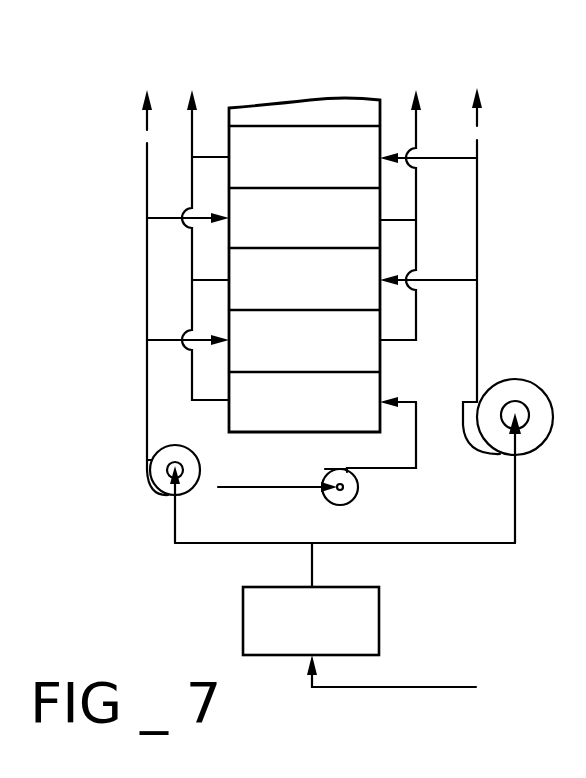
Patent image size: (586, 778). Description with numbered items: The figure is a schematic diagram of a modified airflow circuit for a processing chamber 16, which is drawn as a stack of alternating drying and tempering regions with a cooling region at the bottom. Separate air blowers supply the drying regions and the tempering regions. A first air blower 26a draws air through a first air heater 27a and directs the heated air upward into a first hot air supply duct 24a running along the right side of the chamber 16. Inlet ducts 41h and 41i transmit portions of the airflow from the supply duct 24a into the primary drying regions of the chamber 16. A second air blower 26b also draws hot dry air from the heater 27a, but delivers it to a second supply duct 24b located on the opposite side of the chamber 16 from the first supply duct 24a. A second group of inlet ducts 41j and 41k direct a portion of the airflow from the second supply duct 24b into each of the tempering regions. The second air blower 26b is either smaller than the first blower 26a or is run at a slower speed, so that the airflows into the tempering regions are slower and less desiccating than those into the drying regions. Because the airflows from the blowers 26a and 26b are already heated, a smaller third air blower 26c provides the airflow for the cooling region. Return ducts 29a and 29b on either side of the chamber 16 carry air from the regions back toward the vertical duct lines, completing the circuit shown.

The processing chamber 16 is at (306, 92).
The first hot air supply duct 24a is at (477, 225).
The second supply duct 24b is at (147, 183).
The first air blower 26a is at (478, 448).
The second air blower 26b is at (152, 493).
The third air blower 26c is at (343, 505).
The first air heater 27a is at (380, 613).
The right recirculation duct 29a is at (393, 343).
The left recirculation duct 29b is at (192, 383).
The inlet duct 41h is at (445, 158).
The inlet duct 41i is at (448, 282).
The inlet duct 41j is at (167, 219).
The inlet duct 41k is at (160, 338).